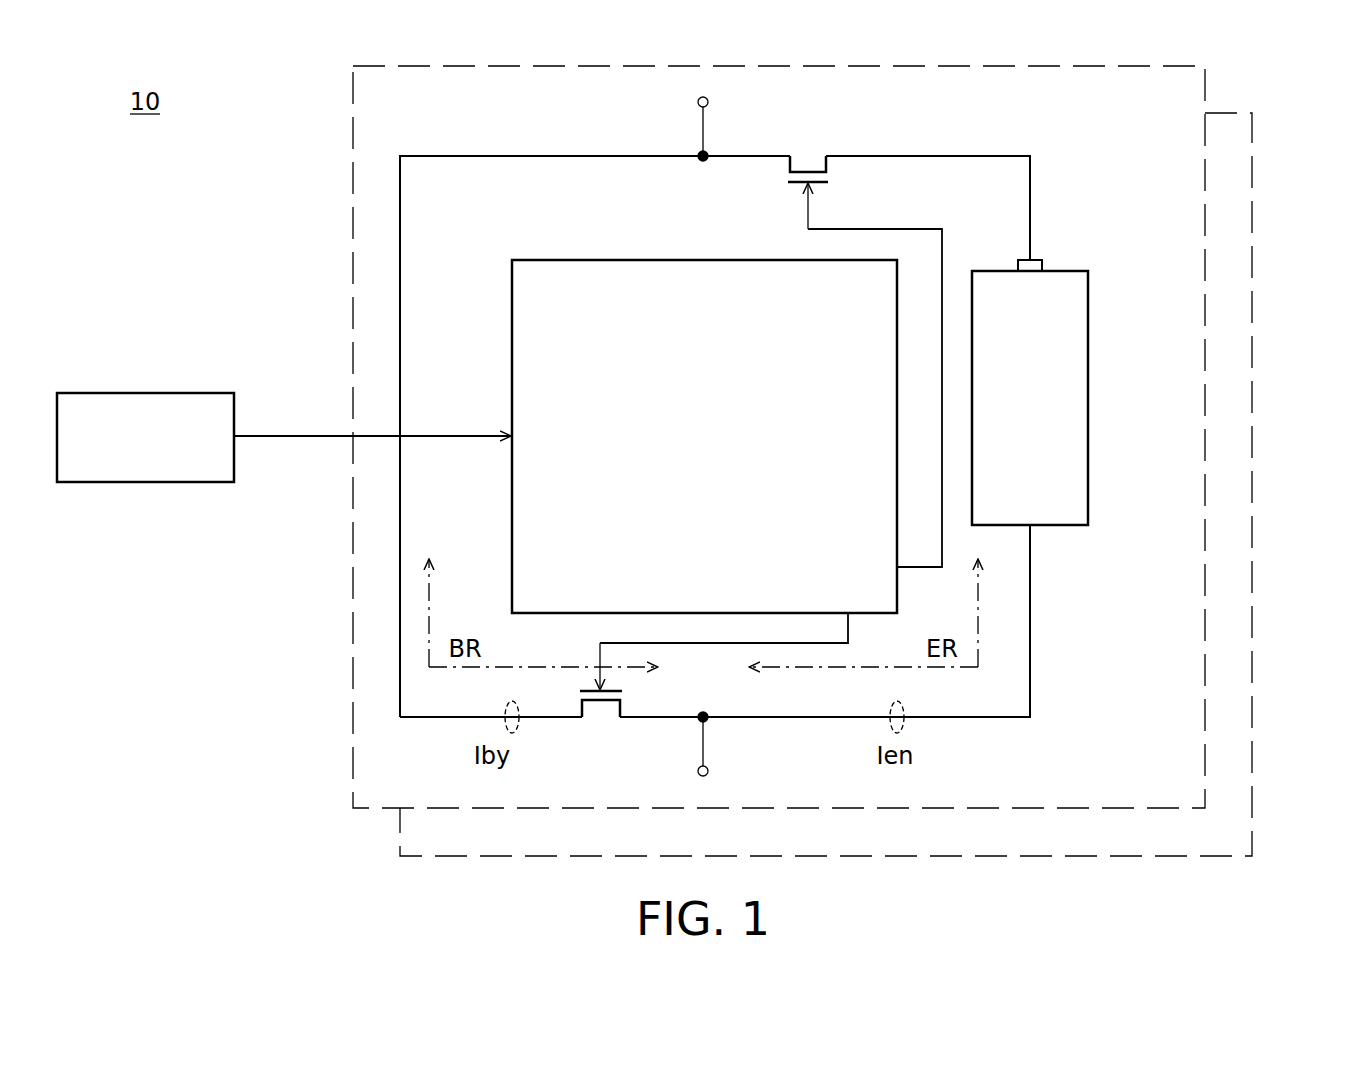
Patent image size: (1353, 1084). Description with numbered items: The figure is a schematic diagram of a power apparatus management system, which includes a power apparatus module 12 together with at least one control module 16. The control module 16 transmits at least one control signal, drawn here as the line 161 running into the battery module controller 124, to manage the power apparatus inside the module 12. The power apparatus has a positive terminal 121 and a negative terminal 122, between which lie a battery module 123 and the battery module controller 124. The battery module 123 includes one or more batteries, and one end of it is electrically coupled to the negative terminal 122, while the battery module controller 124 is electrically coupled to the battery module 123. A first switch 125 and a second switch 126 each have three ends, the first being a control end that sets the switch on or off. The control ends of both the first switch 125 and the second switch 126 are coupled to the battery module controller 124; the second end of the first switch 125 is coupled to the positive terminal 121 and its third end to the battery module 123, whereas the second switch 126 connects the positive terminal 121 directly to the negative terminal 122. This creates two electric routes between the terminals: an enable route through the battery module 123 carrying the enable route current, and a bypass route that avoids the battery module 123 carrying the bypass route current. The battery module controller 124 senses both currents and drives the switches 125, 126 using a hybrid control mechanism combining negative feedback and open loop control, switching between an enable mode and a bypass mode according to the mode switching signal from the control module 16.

The power apparatus module 12 is at (1205, 82).
The control module 16 is at (145, 392).
The control signal line 161 is at (285, 437).
The positive terminal 121 is at (690, 102).
The negative terminal 122 is at (718, 770).
The battery module 123 is at (1088, 397).
The battery module controller 124 is at (686, 258).
The first switch 125 is at (804, 152).
The second switch 126 is at (600, 722).